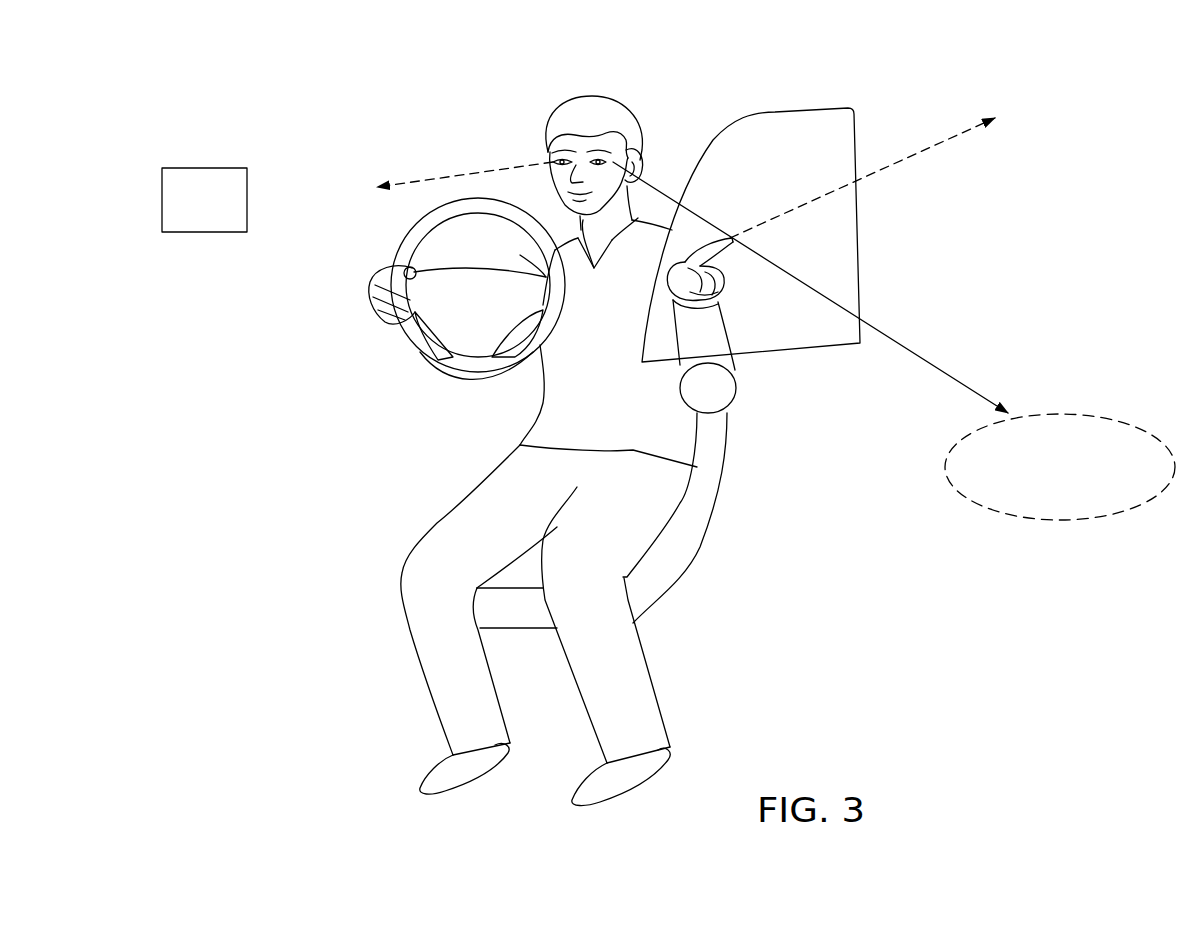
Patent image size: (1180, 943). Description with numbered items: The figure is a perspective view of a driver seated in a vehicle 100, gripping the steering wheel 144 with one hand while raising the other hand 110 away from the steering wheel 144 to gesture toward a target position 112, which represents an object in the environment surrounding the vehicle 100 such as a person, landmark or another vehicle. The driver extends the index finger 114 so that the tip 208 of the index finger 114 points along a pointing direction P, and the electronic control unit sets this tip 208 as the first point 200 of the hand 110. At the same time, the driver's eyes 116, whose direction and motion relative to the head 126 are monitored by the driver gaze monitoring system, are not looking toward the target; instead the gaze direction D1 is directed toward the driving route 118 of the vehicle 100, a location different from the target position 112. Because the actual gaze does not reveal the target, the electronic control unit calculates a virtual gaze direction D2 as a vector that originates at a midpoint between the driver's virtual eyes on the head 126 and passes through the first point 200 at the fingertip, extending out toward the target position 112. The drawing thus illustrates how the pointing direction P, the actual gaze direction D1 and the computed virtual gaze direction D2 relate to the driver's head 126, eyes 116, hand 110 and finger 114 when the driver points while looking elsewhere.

The vehicle 100 is at (915, 97).
The hand 110 is at (737, 291).
The final target position 112 is at (1125, 420).
The index finger 114 is at (728, 237).
The eyes 116 is at (555, 160).
The driving route 118 is at (248, 200).
The head 126 is at (600, 93).
The steering wheel 144 is at (402, 340).
The first point 200 is at (738, 240).
The tip 208 is at (740, 230).
The gaze direction D1 is at (430, 178).
The virtual gaze direction D2 is at (912, 353).
The pointing direction P is at (1003, 112).